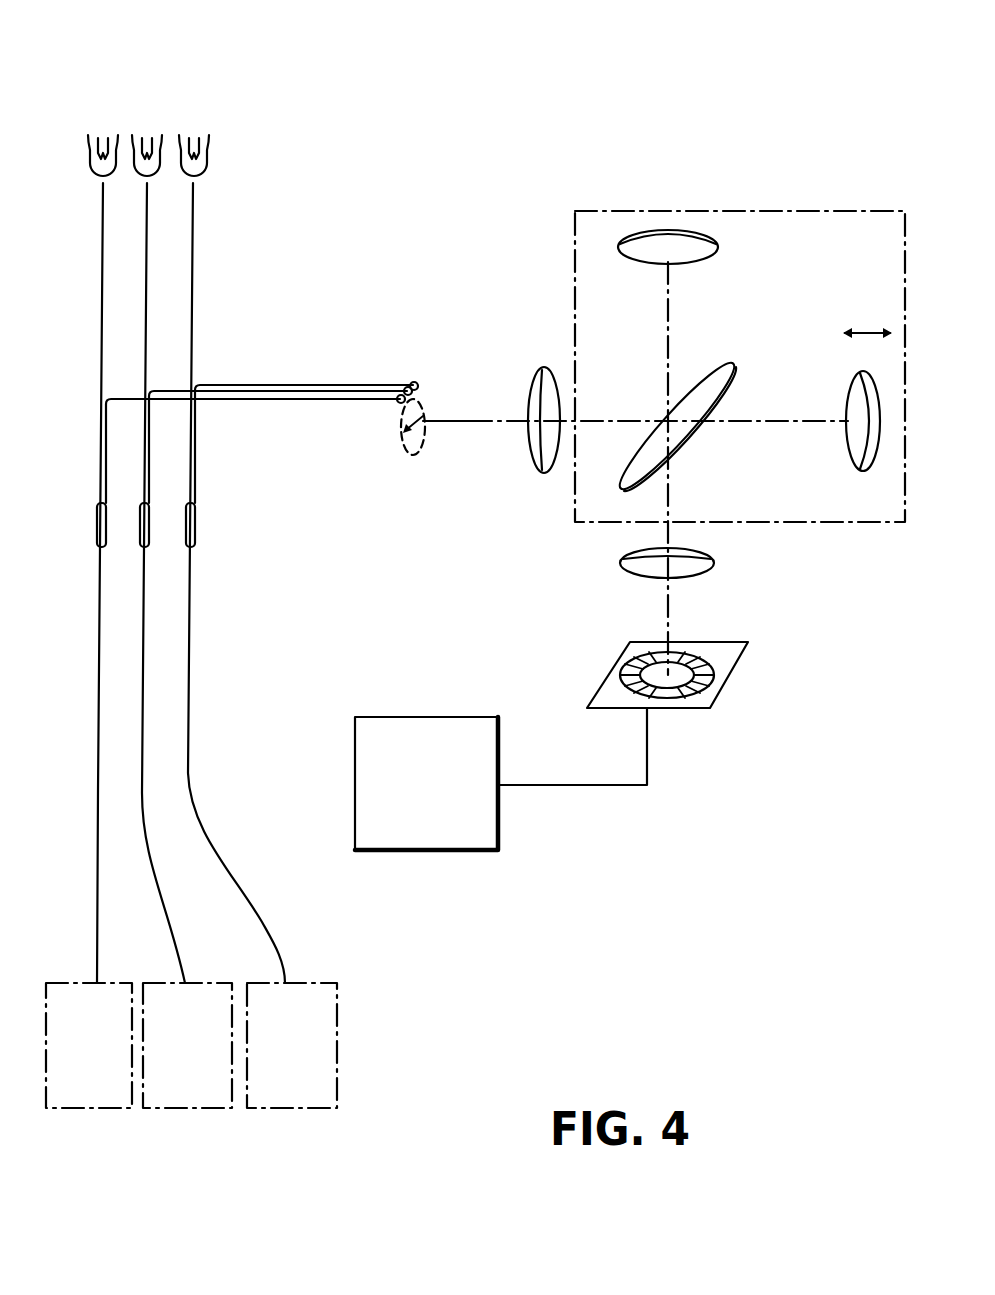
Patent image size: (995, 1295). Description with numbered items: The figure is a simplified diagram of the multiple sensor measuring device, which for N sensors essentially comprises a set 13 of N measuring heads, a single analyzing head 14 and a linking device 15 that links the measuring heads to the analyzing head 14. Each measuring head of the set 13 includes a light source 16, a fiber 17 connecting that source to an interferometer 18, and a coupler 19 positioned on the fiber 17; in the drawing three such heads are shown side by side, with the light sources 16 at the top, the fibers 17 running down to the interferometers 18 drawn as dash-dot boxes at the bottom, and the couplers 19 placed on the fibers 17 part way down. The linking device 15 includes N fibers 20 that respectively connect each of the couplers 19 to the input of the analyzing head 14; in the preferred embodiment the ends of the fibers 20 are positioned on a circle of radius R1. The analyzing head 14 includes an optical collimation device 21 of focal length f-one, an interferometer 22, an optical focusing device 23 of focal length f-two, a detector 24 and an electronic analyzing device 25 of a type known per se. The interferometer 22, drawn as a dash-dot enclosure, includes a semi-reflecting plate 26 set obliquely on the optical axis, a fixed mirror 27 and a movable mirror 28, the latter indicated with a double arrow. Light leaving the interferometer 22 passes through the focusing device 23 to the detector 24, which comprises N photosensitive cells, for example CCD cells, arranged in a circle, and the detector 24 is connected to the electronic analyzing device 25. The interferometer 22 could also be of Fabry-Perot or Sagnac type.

The set of N measuring heads 13 is at (425, 1008).
The analyzing head 14 is at (717, 92).
The linking device 15 is at (381, 278).
The light source 16 is at (193, 132).
The fiber 17 is at (103, 298).
The interferometer 18 is at (117, 1108).
The coupler 19 is at (106, 531).
The fibers 20 is at (333, 399).
The radius R1 is at (420, 425).
The optical collimation device 21 is at (543, 473).
The interferometer 22 is at (792, 211).
The optical focusing device 23 is at (683, 578).
The detector 24 is at (728, 680).
The electronic analyzing device 25 is at (500, 832).
The semi-reflecting plate 26 is at (732, 370).
The fixed mirror 27 is at (648, 265).
The movable mirror 28 is at (850, 463).